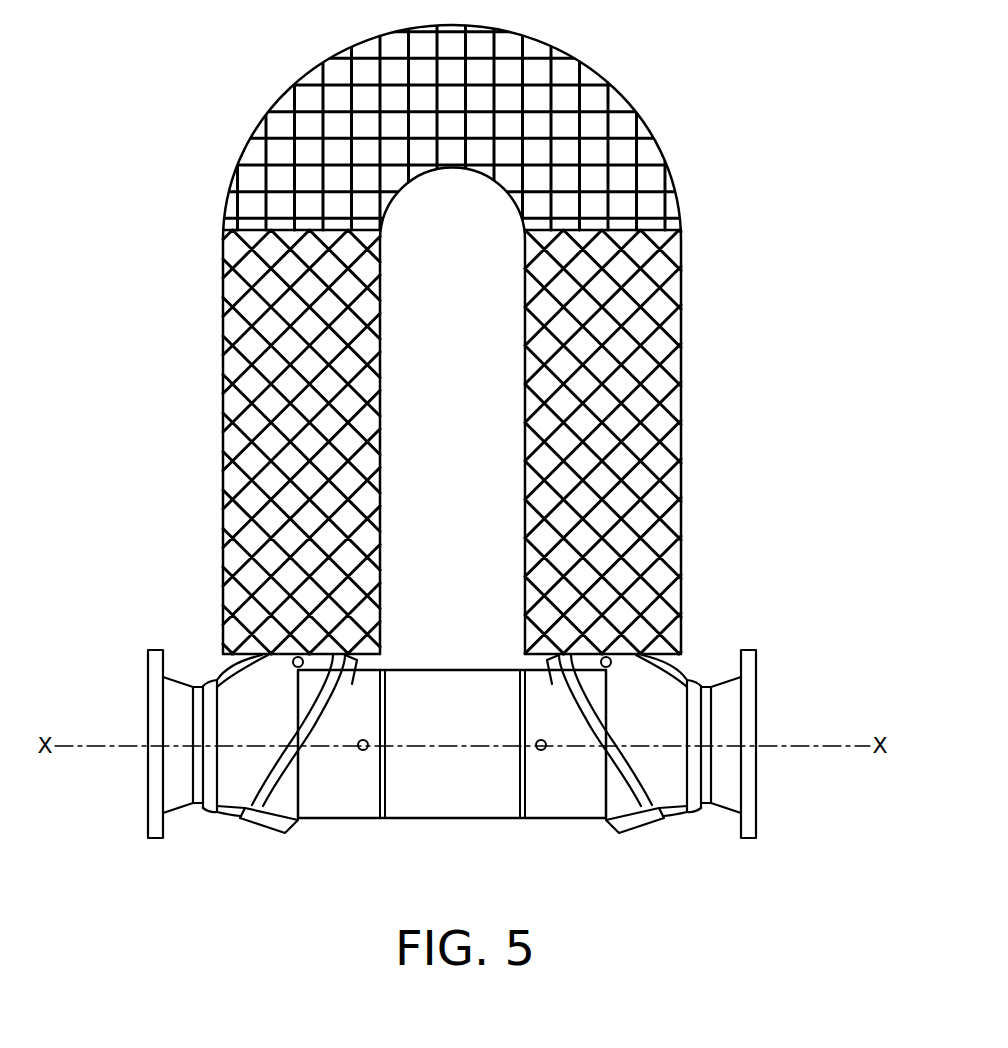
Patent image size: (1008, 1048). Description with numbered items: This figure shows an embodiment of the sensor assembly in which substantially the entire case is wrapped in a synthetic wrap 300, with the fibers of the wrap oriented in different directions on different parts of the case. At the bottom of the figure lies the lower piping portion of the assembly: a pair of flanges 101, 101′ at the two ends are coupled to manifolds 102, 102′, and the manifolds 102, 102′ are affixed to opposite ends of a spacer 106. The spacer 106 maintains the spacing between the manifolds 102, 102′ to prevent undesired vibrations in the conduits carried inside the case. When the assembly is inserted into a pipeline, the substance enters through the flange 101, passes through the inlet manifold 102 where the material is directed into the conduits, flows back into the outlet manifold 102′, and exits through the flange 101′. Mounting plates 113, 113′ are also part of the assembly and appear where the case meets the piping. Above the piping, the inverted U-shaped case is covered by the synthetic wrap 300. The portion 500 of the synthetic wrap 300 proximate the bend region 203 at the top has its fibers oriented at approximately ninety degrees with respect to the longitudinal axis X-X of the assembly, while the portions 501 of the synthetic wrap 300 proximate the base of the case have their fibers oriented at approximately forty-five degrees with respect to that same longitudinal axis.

The flange 101 is at (155, 838).
The flange 101′ is at (766, 635).
The manifold 102 is at (232, 793).
The manifold 102′ is at (673, 813).
The spacer 106 is at (521, 818).
The mounting plate 113 is at (383, 662).
The mounting plate 113′ is at (526, 656).
The bend region 203 is at (468, 184).
The synthetic wrap 300 is at (707, 355).
The portion of the synthetic wrap 500 is at (691, 161).
The portion of the synthetic wrap 501 is at (707, 532).